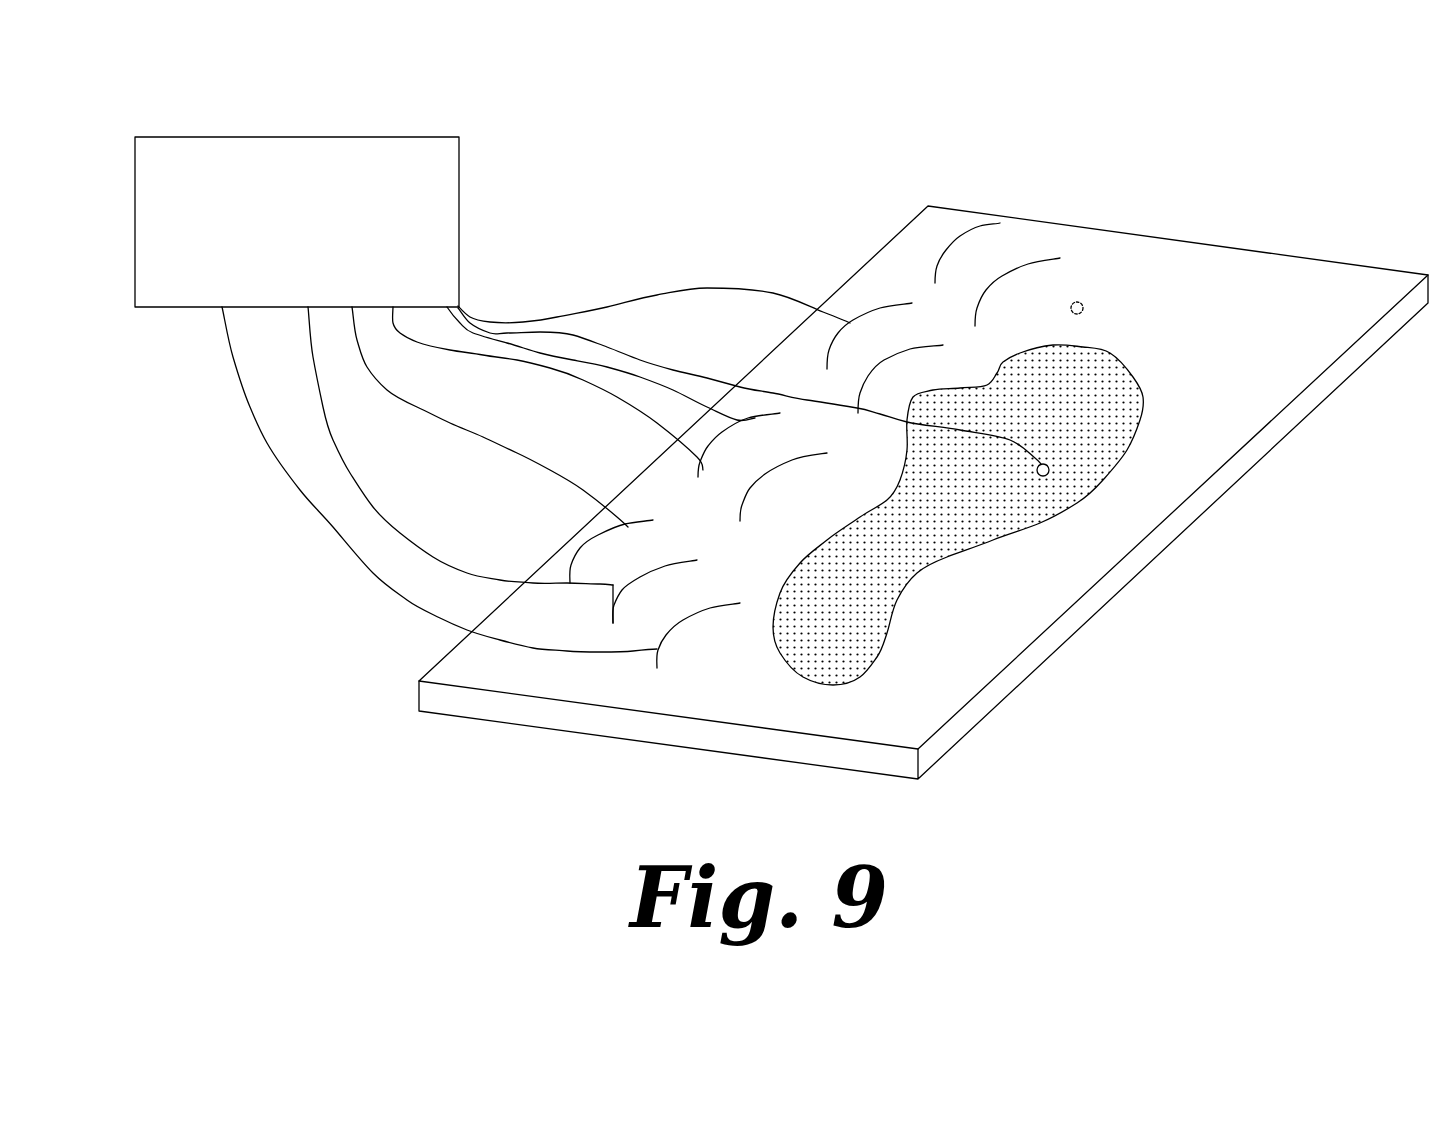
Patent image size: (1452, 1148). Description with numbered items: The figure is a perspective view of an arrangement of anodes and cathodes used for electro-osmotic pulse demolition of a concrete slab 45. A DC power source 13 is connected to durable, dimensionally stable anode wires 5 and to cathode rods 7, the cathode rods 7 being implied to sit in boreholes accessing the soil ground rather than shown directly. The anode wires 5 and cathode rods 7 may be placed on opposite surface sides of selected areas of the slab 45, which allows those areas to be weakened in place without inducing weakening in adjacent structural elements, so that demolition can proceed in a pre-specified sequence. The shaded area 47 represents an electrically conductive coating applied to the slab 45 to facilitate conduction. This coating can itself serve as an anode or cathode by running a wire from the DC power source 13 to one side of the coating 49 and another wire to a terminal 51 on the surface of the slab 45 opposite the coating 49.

The DC power source 13 is at (352, 137).
The durable, dimensionally stable anode wires 5 is at (613, 620).
The cathode rods 7 is at (657, 652).
The concrete slab 45 is at (1097, 590).
The area of electrically conductive coating 47 is at (1110, 352).
The coating 49 is at (1045, 445).
The terminal 51 is at (1085, 302).